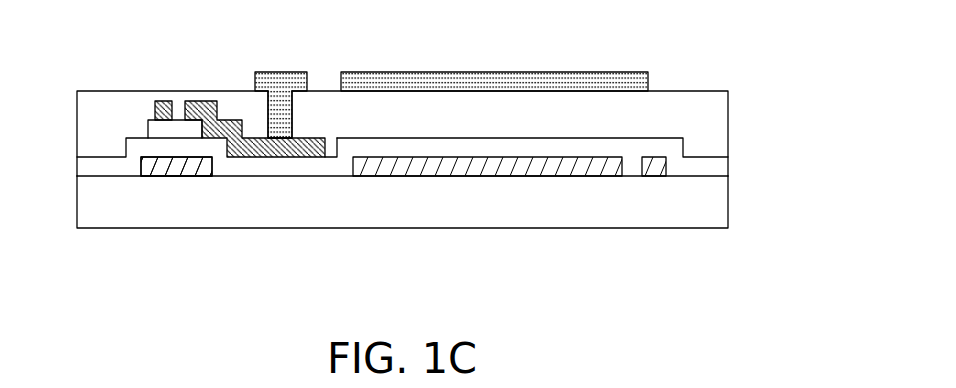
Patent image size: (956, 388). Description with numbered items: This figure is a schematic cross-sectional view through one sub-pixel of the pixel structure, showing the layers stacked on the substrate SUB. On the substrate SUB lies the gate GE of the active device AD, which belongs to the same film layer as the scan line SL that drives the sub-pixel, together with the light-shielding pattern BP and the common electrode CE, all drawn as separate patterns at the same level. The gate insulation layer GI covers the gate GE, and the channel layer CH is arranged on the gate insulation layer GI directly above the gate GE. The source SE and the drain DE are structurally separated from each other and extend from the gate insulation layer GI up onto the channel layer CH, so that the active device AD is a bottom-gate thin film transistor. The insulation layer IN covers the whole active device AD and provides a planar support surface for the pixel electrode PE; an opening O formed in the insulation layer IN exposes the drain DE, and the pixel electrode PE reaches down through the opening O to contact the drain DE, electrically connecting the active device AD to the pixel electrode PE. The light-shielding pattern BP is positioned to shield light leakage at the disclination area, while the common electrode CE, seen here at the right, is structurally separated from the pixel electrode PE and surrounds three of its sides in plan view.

The insulation layer IN is at (90, 118).
The substrate SUB is at (89, 207).
The pixel electrode PE is at (355, 72).
The opening O is at (272, 112).
The active device AD is at (207, 228).
The gate insulation layer GI is at (248, 165).
The gate GE is at (167, 174).
The scan line SL is at (176, 233).
The channel layer CH is at (193, 132).
The source SE is at (155, 104).
The drain DE is at (255, 205).
The light-shielding pattern BP is at (476, 168).
The common electrode CE is at (661, 168).